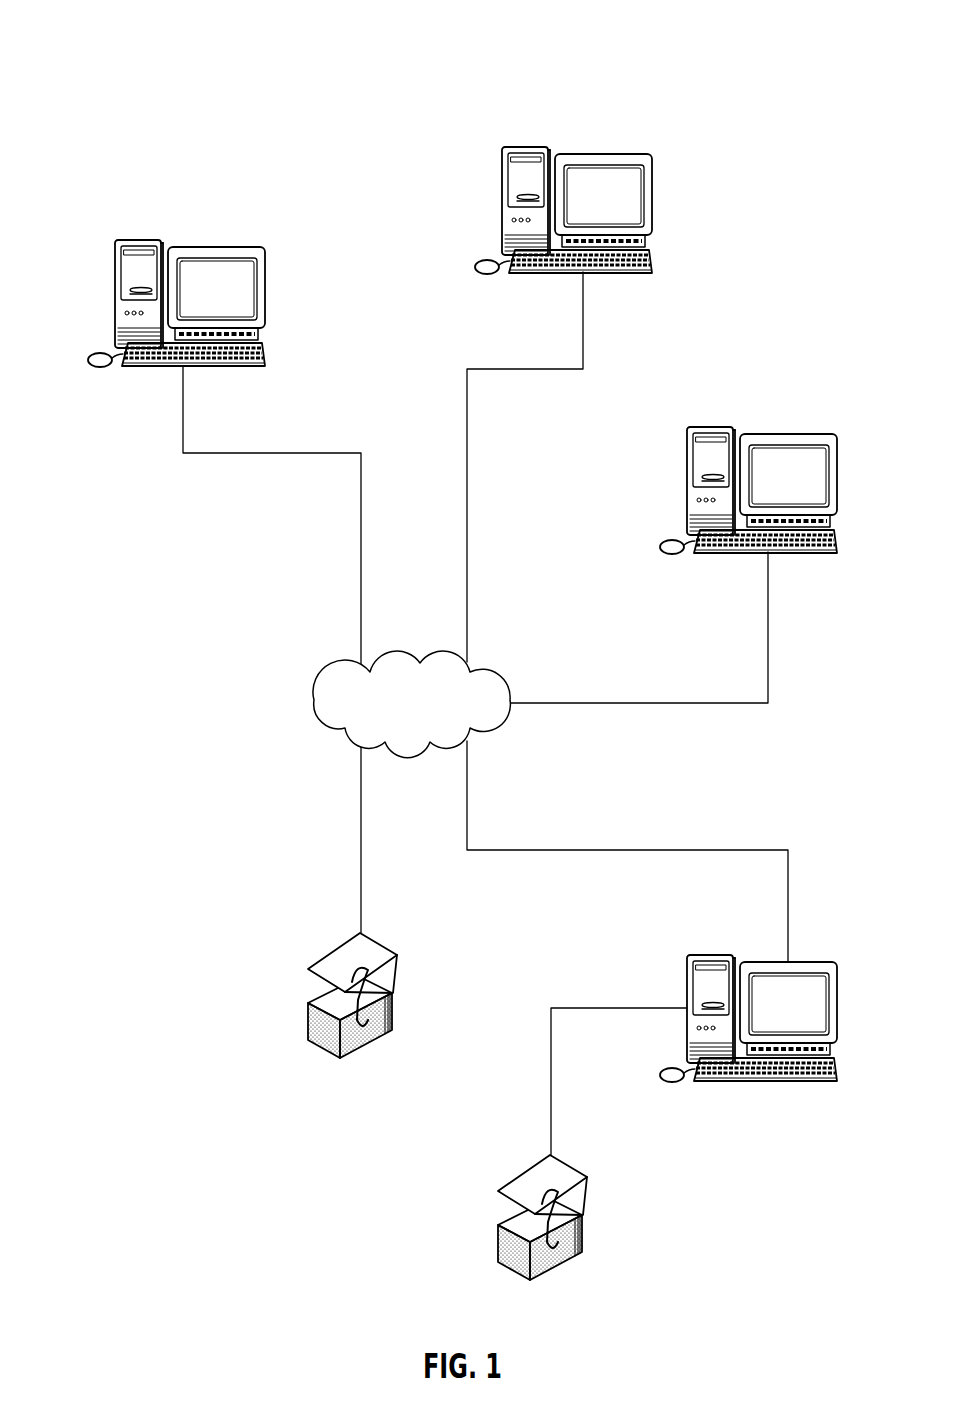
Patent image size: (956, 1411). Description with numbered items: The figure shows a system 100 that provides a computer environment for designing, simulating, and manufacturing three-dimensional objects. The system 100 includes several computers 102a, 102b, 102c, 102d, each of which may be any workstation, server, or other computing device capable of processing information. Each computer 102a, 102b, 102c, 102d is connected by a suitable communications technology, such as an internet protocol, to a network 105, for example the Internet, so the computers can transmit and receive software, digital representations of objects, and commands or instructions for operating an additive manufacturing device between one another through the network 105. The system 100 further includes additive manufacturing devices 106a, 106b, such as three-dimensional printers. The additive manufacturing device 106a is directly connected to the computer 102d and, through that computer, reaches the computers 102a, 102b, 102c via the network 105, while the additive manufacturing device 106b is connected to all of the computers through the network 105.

The system 100 is at (203, 49).
The computer 102a is at (140, 240).
The computer 102b is at (527, 146).
The computer 102c is at (712, 427).
The computer 102d is at (712, 955).
The network 105 is at (435, 717).
The additive manufacturing device 106a is at (584, 1232).
The additive manufacturing device 106b is at (394, 1010).